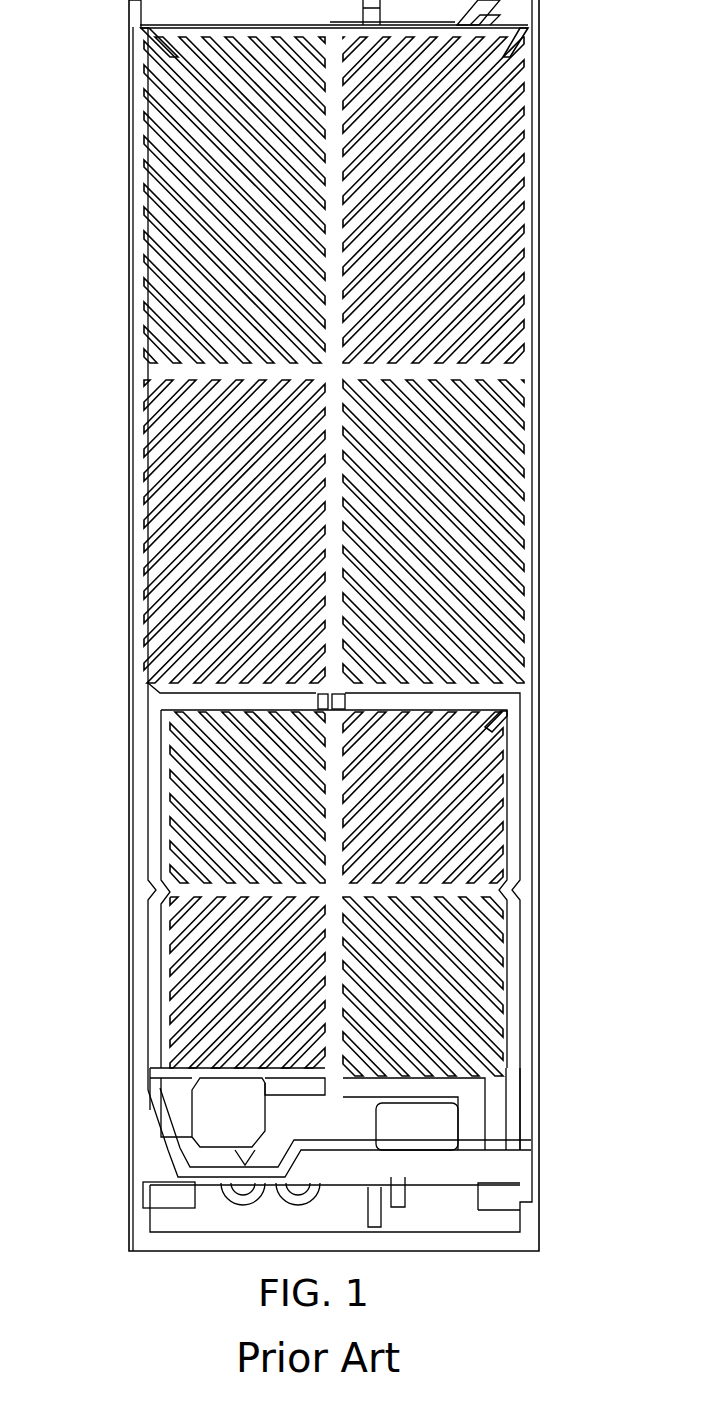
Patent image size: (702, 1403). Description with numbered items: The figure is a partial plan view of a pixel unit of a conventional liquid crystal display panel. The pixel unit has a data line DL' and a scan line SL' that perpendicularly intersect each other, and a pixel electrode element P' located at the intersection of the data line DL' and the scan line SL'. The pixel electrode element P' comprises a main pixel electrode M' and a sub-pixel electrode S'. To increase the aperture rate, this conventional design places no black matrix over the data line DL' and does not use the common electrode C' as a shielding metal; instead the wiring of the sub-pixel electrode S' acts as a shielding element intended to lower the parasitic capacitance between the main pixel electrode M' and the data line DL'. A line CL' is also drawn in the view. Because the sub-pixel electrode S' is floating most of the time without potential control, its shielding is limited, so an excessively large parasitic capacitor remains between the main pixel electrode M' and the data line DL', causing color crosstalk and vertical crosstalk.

The pixel electrode element P' is at (292, 556).
The sub-pixel electrode S' is at (362, 625).
The data line DL' is at (274, 588).
The main pixel electrode M' is at (367, 548).
The common line CL' is at (285, 1086).
The common electrode C' is at (294, 1127).
The scan line SL' is at (292, 1193).